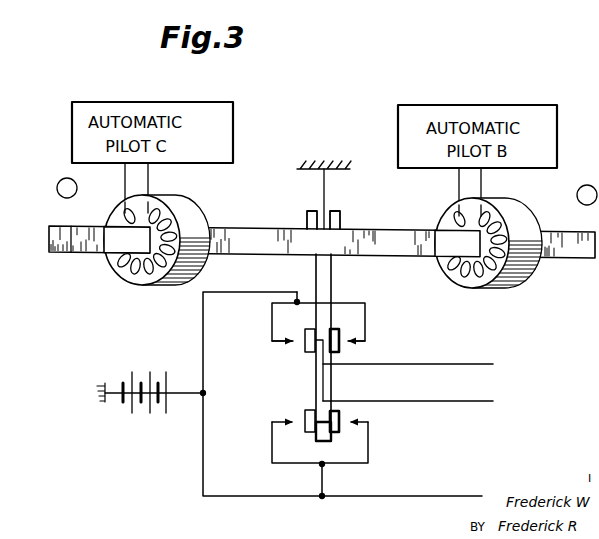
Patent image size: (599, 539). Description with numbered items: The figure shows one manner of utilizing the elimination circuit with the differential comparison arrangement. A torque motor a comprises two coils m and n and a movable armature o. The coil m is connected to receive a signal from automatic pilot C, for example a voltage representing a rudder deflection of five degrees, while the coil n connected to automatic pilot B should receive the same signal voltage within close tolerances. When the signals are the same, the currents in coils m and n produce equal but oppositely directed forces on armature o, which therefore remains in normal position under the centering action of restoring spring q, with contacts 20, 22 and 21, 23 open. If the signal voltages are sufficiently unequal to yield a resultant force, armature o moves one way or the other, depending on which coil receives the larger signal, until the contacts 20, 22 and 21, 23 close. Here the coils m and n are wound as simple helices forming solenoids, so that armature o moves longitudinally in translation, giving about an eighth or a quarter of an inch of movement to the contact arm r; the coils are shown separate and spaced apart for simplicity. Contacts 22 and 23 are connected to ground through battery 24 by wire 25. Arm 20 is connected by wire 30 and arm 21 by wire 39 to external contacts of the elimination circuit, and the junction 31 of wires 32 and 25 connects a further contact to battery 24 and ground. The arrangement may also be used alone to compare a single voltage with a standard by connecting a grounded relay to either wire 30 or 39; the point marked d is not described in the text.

The contact arm 20 is at (309, 353).
The contact arm 21 is at (311, 409).
The contact 22 is at (292, 342).
The contact 23 is at (293, 424).
The battery 24 is at (151, 416).
The wire 25 is at (248, 294).
The wire 30 is at (440, 363).
The junction 31 is at (321, 499).
The wire 32 is at (440, 495).
The wire 39 is at (419, 390).
The coil m is at (124, 274).
The coil n is at (466, 276).
The armature o is at (261, 226).
The restoring spring q is at (355, 207).
The contact arm r is at (333, 283).
The torque motor a is at (359, 391).
The connection point d is at (357, 522).